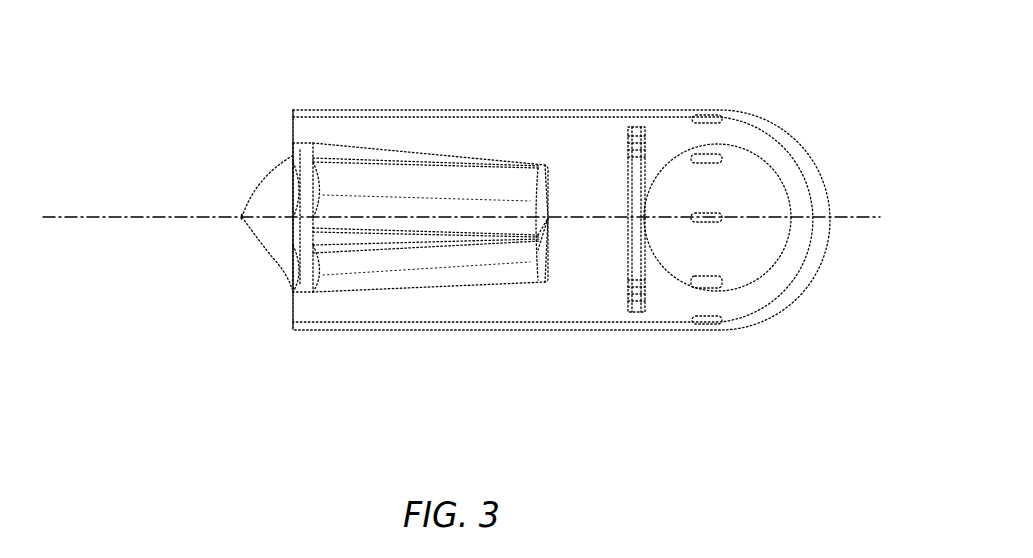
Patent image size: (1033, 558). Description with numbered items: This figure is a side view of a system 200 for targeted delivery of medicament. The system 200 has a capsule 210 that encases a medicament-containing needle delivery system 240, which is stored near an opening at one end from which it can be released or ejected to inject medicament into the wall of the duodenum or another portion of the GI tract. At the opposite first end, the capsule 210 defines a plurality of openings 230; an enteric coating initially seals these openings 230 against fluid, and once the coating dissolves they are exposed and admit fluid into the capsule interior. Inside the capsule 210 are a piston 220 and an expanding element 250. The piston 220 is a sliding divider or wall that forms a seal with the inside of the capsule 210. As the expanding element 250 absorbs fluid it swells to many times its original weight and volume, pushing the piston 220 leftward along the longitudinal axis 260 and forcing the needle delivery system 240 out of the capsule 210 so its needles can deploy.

The system for targeted delivery 200 is at (465, 211).
The capsule 210 is at (575, 252).
The piston 220 is at (662, 262).
The openings 230 is at (735, 174).
The needle delivery system 240 is at (335, 245).
The expanding element 250 is at (765, 238).
The longitudinal axis 260 is at (461, 253).